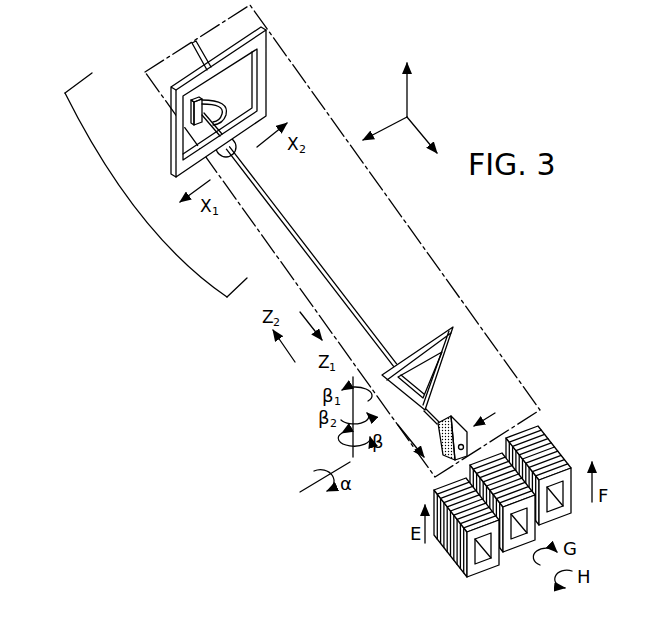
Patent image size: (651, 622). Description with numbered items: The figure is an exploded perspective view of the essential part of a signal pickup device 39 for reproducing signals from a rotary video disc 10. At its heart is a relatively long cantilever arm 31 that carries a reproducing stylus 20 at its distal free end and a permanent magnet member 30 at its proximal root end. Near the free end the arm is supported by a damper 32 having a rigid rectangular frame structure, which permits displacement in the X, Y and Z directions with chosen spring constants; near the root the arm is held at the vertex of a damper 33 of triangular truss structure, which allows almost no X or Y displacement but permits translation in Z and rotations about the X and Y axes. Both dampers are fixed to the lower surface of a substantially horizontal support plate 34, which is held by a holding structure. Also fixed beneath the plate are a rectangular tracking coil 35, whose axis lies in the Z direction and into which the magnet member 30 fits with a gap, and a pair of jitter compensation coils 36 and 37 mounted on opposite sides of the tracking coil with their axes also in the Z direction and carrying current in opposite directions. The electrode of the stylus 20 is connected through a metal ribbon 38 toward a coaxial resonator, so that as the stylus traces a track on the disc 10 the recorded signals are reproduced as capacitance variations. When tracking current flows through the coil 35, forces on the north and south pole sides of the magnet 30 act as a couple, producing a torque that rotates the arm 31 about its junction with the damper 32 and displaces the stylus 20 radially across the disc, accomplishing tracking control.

The disc 10 is at (109, 181).
The reproducing stylus 20 is at (194, 105).
The permanent magnet member 30 is at (432, 460).
The cantilever arm 31 is at (325, 273).
The damper 32 is at (264, 75).
The damper 33 is at (430, 342).
The support plate 34 is at (447, 277).
The tracking coil 35 is at (518, 547).
The jitter compensation coil 36 is at (453, 559).
The jitter compensation coil 37 is at (566, 511).
The metal ribbon 38 is at (191, 54).
The signal pickup device 39 is at (461, 204).